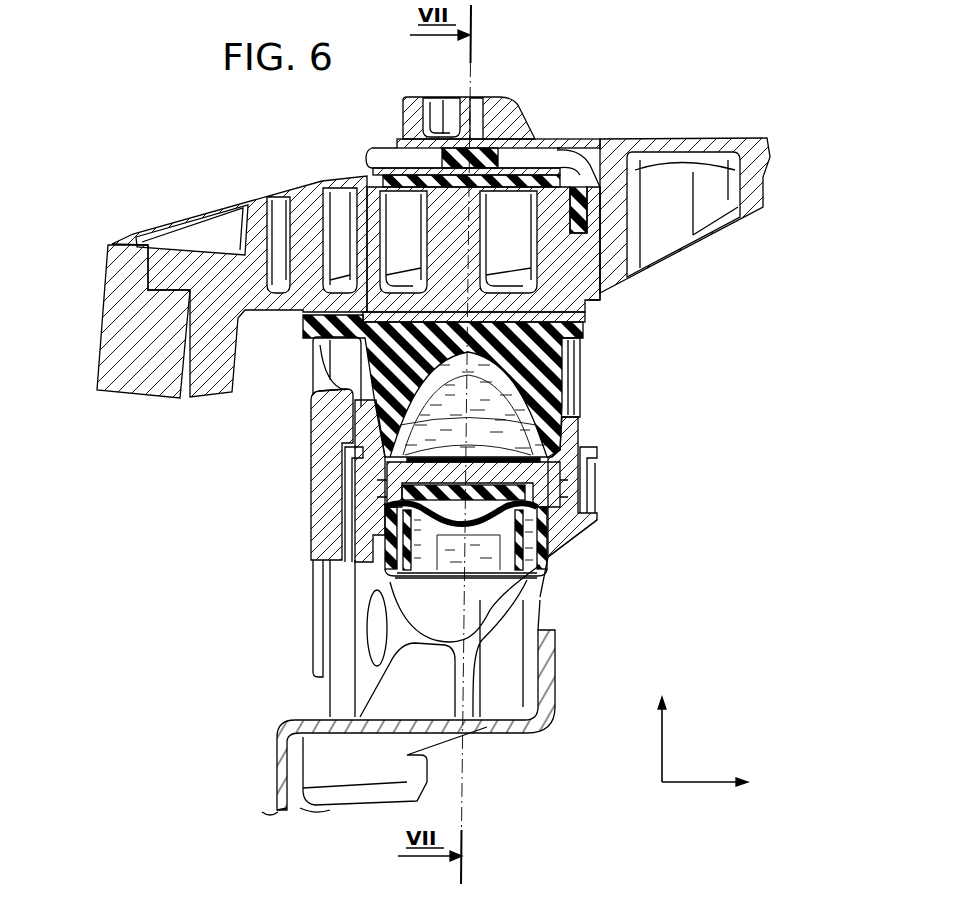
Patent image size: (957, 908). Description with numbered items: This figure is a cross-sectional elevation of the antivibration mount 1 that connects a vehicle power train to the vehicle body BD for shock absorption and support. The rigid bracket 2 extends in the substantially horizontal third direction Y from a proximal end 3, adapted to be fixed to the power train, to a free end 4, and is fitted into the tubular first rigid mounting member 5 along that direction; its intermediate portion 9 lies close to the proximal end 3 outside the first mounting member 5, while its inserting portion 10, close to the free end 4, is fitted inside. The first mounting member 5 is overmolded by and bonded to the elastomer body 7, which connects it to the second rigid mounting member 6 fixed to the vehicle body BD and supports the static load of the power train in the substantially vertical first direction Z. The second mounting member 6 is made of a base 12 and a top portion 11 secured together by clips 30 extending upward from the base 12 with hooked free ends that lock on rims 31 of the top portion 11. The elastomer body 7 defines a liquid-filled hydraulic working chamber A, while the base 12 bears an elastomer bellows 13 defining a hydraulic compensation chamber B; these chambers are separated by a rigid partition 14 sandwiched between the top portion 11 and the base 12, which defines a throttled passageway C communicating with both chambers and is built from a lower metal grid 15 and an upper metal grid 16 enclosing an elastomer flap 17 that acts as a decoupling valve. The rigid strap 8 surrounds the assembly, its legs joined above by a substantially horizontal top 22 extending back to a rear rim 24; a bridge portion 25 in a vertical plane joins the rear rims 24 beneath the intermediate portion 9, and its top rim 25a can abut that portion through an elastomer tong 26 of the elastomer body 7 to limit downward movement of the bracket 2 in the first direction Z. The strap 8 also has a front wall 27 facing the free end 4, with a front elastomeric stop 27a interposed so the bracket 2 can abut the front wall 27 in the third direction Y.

The antivibration mount 1 is at (658, 110).
The rigid bracket 2 is at (184, 192).
The proximal end 3 is at (113, 307).
The free end 4 is at (567, 267).
The first rigid mounting member 5 is at (583, 228).
The second rigid mounting member 6 is at (604, 526).
The elastomer body 7 is at (578, 363).
The rigid strap 8 is at (786, 135).
The intermediate portion 9 is at (315, 302).
The inserting portion 10 is at (478, 208).
The top portion 11 is at (525, 467).
The base 12 is at (560, 535).
The elastomer bellows 13 is at (395, 573).
The rigid partition 14 is at (411, 446).
The lower metal grid 15 is at (557, 512).
The upper metal grid 16 is at (575, 440).
The elastomer flap 17 is at (397, 517).
The top 22 is at (517, 142).
The rear rim 24 is at (368, 170).
The bridge portion 25 is at (320, 428).
The top rim 25a is at (337, 402).
The elastomer tong 26 is at (322, 338).
The front wall 27 is at (617, 243).
The front elastomeric stop 27a is at (590, 215).
The clips 30 is at (338, 468).
The rims 31 is at (343, 457).
The hydraulic working chamber A is at (555, 437).
The hydraulic compensation chamber B is at (530, 553).
The throttled passageway C is at (383, 488).
The vehicle body BD is at (543, 715).
The first direction Z is at (662, 725).
The third direction Y is at (714, 784).